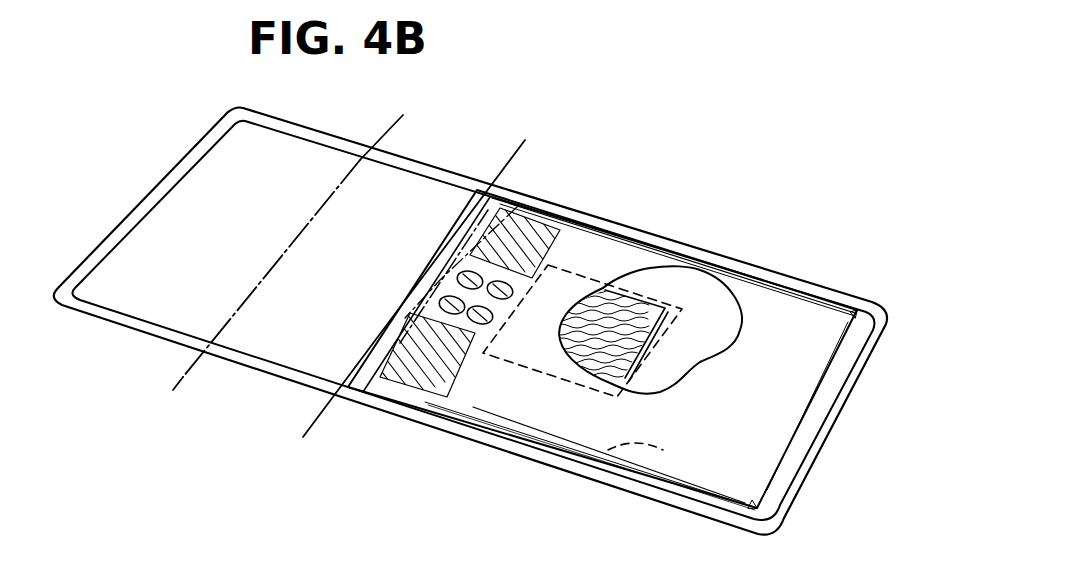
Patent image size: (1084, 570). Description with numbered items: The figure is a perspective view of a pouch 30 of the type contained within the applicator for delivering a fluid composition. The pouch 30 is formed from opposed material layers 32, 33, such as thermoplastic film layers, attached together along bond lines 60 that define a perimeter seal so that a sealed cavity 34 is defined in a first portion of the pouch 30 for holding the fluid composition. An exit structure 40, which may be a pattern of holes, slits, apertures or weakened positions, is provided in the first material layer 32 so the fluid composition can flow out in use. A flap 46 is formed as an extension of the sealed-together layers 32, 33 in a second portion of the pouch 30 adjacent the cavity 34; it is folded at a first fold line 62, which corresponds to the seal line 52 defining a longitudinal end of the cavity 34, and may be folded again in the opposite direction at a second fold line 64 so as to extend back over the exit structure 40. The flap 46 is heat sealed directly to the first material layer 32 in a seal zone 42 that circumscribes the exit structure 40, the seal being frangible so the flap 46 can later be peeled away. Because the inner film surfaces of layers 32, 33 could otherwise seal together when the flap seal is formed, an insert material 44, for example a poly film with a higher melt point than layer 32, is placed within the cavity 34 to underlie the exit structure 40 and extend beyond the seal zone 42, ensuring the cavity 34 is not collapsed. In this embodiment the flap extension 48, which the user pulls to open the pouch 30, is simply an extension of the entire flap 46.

The pouch 30 is at (657, 170).
The first material layer 32 is at (643, 252).
The second material layer 33 is at (612, 450).
The cavity 34 is at (690, 290).
The exit structure 40 is at (478, 325).
The seal zone 42 is at (547, 213).
The insert material 44 is at (548, 265).
The flap 46 is at (418, 188).
The flap extension 48 is at (194, 185).
The seal line 52 is at (382, 360).
The bond lines 60 is at (818, 282).
The first fold line 62 is at (300, 437).
The second fold line 64 is at (177, 378).